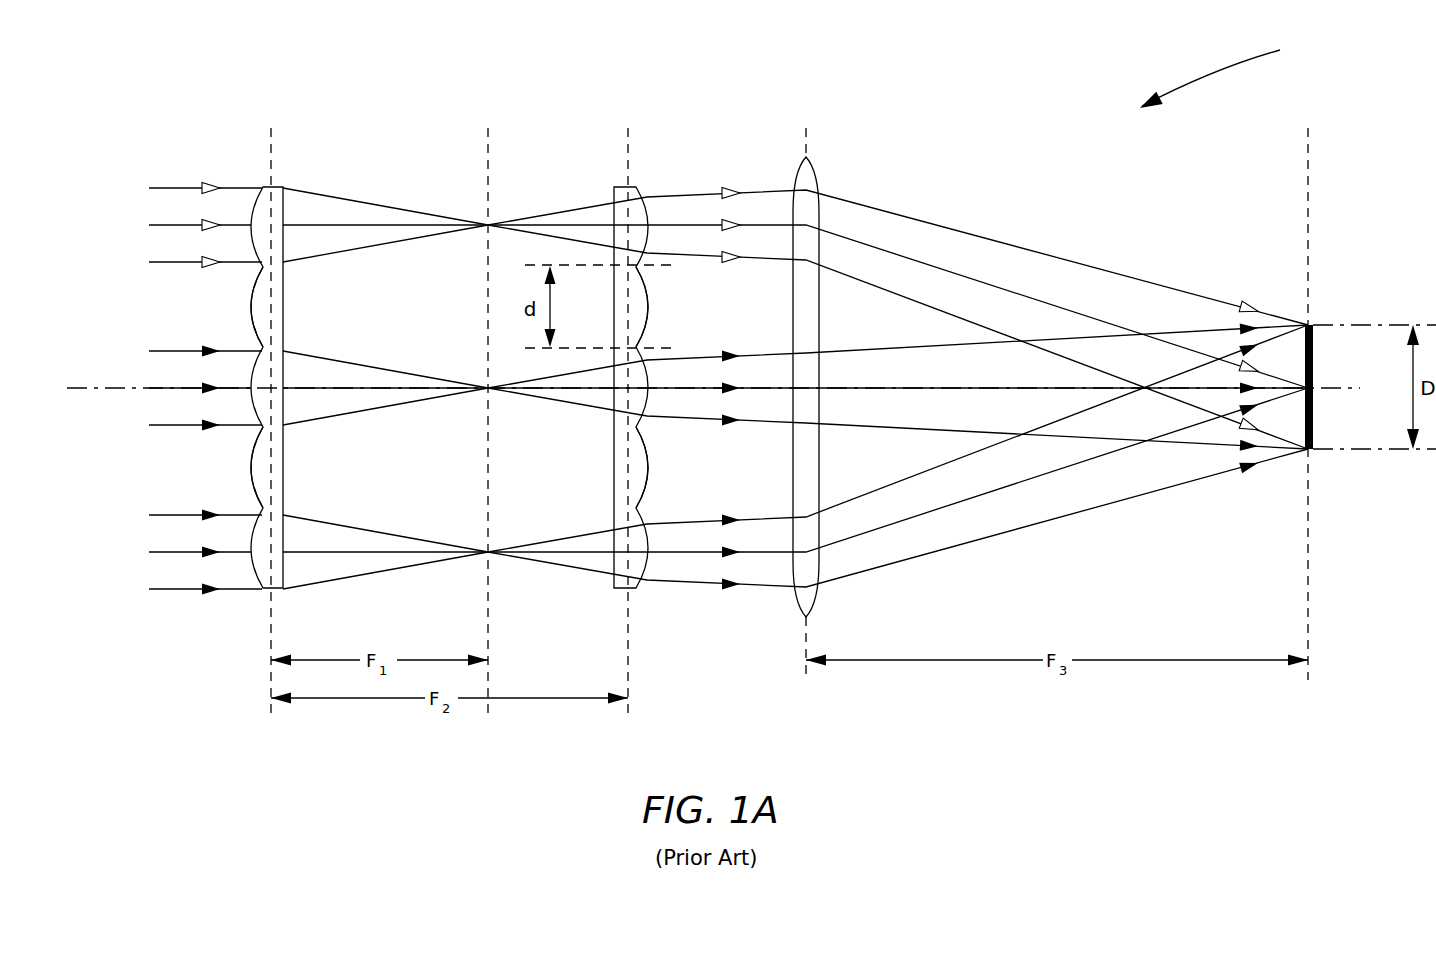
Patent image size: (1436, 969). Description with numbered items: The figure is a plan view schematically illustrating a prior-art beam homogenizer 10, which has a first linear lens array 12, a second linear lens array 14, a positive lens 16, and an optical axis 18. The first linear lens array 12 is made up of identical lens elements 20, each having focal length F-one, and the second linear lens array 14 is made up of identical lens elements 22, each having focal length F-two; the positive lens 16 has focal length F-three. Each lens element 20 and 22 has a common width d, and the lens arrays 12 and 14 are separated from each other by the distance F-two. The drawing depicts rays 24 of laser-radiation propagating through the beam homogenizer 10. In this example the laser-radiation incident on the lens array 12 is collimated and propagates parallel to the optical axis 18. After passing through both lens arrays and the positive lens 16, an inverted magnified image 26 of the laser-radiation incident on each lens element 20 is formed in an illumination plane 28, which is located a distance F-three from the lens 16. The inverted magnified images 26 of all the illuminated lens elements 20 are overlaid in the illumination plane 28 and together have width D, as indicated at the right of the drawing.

The beam homogenizer 10 is at (1230, 74).
The first linear lens array 12 is at (266, 187).
The second linear lens array 14 is at (620, 187).
The positive lens 16 is at (806, 158).
The optical axis 18 is at (93, 386).
The lens element 20 is at (257, 325).
The lens element 22 is at (645, 322).
The rays 24 is at (173, 187).
The inverted magnified image 26 is at (1313, 345).
The illumination plane 28 is at (1308, 230).